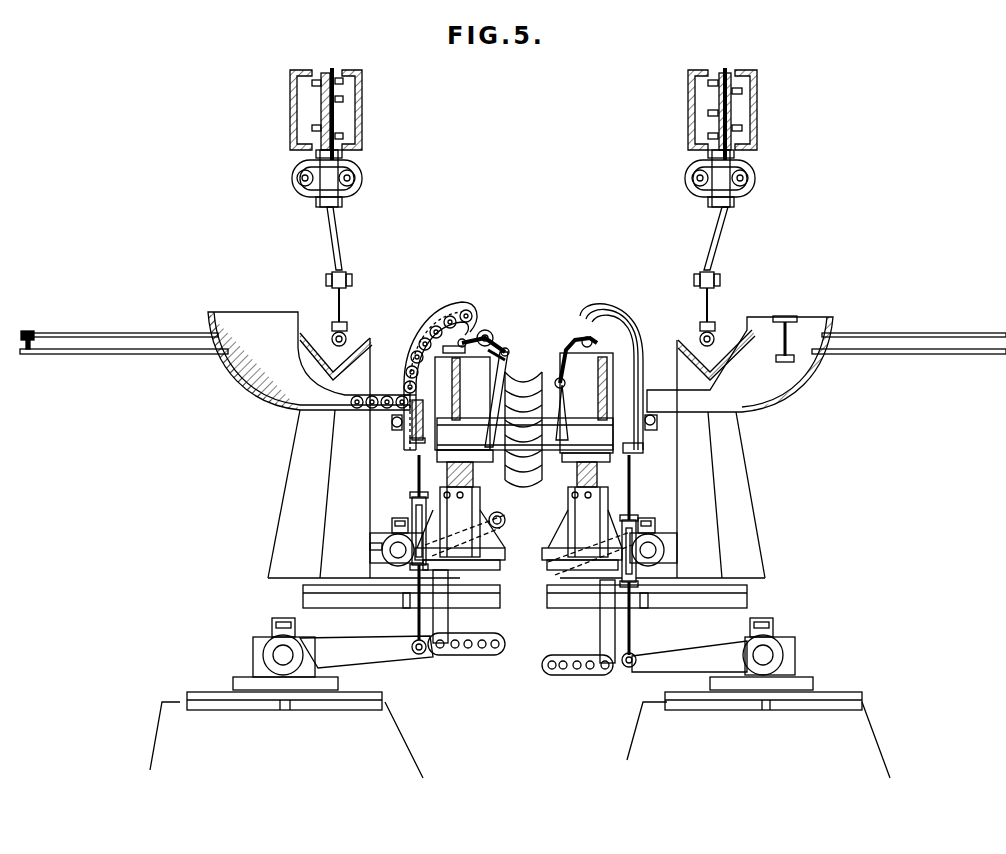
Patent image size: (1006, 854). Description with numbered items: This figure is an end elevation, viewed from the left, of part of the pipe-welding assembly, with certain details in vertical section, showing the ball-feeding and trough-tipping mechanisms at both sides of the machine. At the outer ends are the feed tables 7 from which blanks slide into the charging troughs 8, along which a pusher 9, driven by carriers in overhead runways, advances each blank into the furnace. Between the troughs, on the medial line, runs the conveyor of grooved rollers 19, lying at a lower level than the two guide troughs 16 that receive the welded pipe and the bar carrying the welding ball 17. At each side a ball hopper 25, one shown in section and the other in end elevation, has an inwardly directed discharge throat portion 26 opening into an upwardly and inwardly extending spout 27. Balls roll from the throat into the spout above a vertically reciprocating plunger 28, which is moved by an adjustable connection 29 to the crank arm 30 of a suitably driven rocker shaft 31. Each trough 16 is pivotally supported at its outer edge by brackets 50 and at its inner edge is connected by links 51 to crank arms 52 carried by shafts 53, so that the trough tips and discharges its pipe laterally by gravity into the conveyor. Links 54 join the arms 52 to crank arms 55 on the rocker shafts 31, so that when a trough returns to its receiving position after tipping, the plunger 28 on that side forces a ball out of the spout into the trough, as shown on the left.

The feed table 7 is at (118, 343).
The trough 8 is at (358, 343).
The pusher 9 is at (332, 337).
The guide trough 16 is at (505, 343).
The welding ball 17 is at (486, 330).
The grooved roller 19 is at (523, 387).
The ball hopper 25 is at (256, 353).
The discharge throat portion 26 is at (357, 412).
The spout 27 is at (412, 340).
The plunger 28 is at (420, 423).
The adjustable connection 29 is at (412, 477).
The crank arm 30 is at (387, 650).
The rocker shaft 31 is at (280, 655).
The bracket 50 is at (580, 332).
The link 51 is at (515, 342).
The crank arm 52 is at (504, 520).
The shaft 53 is at (398, 551).
The link 54 is at (447, 635).
The crank arm 55 is at (475, 653).